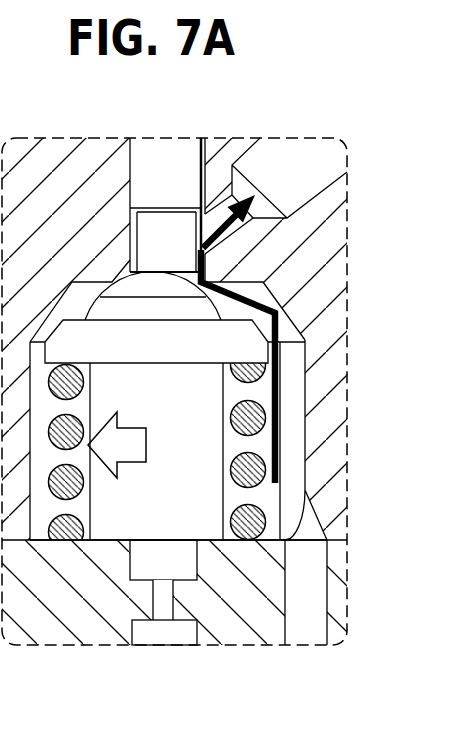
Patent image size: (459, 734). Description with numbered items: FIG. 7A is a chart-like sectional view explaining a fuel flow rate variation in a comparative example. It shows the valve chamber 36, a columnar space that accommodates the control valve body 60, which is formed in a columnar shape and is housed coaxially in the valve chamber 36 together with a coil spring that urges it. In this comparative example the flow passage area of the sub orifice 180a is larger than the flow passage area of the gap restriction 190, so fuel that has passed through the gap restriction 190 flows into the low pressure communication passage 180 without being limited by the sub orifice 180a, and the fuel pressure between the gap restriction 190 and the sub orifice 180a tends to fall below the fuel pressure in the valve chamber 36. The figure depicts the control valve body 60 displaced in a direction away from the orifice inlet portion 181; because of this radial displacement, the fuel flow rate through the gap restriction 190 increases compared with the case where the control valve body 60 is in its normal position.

The orifice inlet portion 181 is at (201, 240).
The sub orifice 180a is at (218, 205).
The low pressure communication passage 180 is at (272, 153).
The gap restriction 190 is at (208, 278).
The valve chamber 36 is at (287, 403).
The control valve body 60 is at (223, 502).